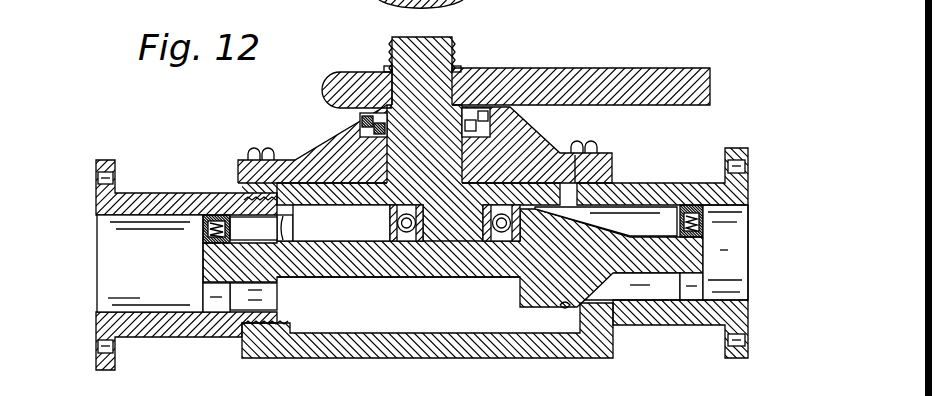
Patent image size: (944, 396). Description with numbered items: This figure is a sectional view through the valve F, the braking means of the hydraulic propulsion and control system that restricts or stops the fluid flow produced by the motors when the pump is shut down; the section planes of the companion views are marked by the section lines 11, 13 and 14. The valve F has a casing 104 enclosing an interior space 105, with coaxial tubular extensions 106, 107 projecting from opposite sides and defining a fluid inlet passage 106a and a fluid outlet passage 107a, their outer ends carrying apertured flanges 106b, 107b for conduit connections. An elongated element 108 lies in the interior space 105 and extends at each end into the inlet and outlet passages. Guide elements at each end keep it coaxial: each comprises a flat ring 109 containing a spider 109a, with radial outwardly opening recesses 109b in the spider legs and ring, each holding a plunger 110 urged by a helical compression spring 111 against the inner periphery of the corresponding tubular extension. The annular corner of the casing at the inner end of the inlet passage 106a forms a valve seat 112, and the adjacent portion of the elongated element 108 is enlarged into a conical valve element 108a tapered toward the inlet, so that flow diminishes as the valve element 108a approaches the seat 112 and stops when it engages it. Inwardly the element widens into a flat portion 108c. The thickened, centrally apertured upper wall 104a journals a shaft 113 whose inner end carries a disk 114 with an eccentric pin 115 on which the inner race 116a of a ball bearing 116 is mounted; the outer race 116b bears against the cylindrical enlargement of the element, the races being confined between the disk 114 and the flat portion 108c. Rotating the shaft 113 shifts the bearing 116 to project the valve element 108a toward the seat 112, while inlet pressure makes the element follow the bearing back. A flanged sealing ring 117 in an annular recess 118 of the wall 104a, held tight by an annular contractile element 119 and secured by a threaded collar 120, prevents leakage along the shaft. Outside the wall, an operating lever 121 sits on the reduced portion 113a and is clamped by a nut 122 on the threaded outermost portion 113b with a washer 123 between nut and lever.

The section line 11- 11 is at (424, 280).
The section line 13- 13 is at (450, 200).
The section line 14- 14 is at (708, 262).
The valve F is at (622, 152).
The casing 104 is at (518, 353).
The upper wall 104a is at (327, 153).
The interior space 105 is at (367, 327).
The tubular extension 106 is at (628, 185).
The fluid inlet passage 106a is at (742, 220).
The apertured flange 106b is at (740, 153).
The tubular extension 107 is at (180, 206).
The fluid outlet passage 107a is at (107, 243).
The apertured flange 107b is at (104, 161).
The elongated element 108 is at (348, 262).
The conical valve element 108a is at (587, 273).
The flat portion 108c is at (452, 263).
The flat ring 109 is at (222, 312).
The spider 109a is at (215, 265).
The recess 109b is at (207, 227).
The plunger 110 is at (216, 213).
The helical compression spring 111 is at (236, 229).
The valve seat 112 is at (571, 313).
The shaft 113 is at (432, 150).
The reduced dimension portion 113a is at (403, 90).
The outermost portion 113b is at (408, 44).
The disk 114 is at (341, 223).
The eccentrically located pin 115 is at (462, 228).
The ball bearing 116 is at (400, 224).
The inner race 116a is at (418, 258).
The outer race 116b is at (392, 280).
The flanged sealing ring 117 is at (360, 124).
The annular recess 118 is at (490, 128).
The annular contractile element 119 is at (383, 135).
The externally screw-threaded collar 120 is at (380, 74).
The operating lever 121 is at (626, 80).
The nut 122 is at (452, 44).
The washer 123 is at (458, 70).